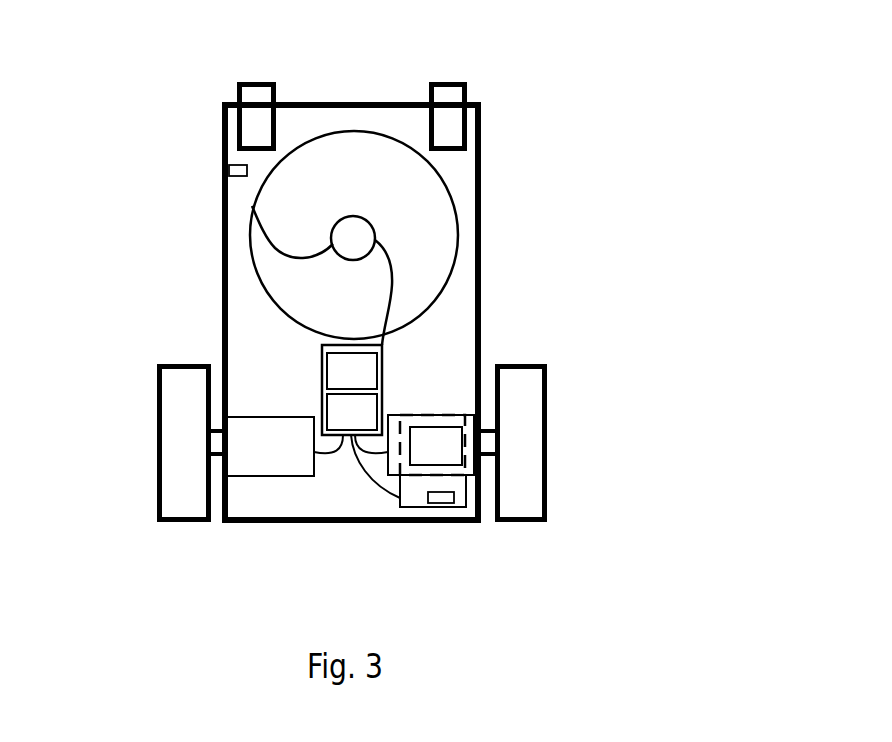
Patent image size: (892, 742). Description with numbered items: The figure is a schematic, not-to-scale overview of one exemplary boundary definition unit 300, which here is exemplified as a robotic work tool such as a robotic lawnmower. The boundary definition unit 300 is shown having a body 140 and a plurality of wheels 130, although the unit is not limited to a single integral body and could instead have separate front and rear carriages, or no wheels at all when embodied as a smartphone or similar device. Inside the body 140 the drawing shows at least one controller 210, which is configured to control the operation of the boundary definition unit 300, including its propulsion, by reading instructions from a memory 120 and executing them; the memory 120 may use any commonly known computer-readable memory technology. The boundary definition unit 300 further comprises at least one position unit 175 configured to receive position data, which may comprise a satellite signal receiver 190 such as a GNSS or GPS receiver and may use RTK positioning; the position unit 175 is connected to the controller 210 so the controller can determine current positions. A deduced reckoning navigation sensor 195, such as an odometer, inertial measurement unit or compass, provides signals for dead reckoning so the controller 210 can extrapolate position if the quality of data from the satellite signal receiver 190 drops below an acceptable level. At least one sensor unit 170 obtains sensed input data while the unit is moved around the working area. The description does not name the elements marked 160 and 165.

The boundary definition unit 300 is at (627, 20).
The wheels 130 is at (237, 88).
The body 140 is at (247, 523).
The cutting deck 160 is at (259, 282).
The cutting blade 165 is at (252, 207).
The sensor unit 170 is at (229, 171).
The controller 210 is at (382, 370).
The memory 120 is at (390, 415).
The deduced reckoning navigation sensor 195 is at (462, 465).
The satellite signal receiver 190 is at (435, 507).
The position unit 175 is at (413, 507).